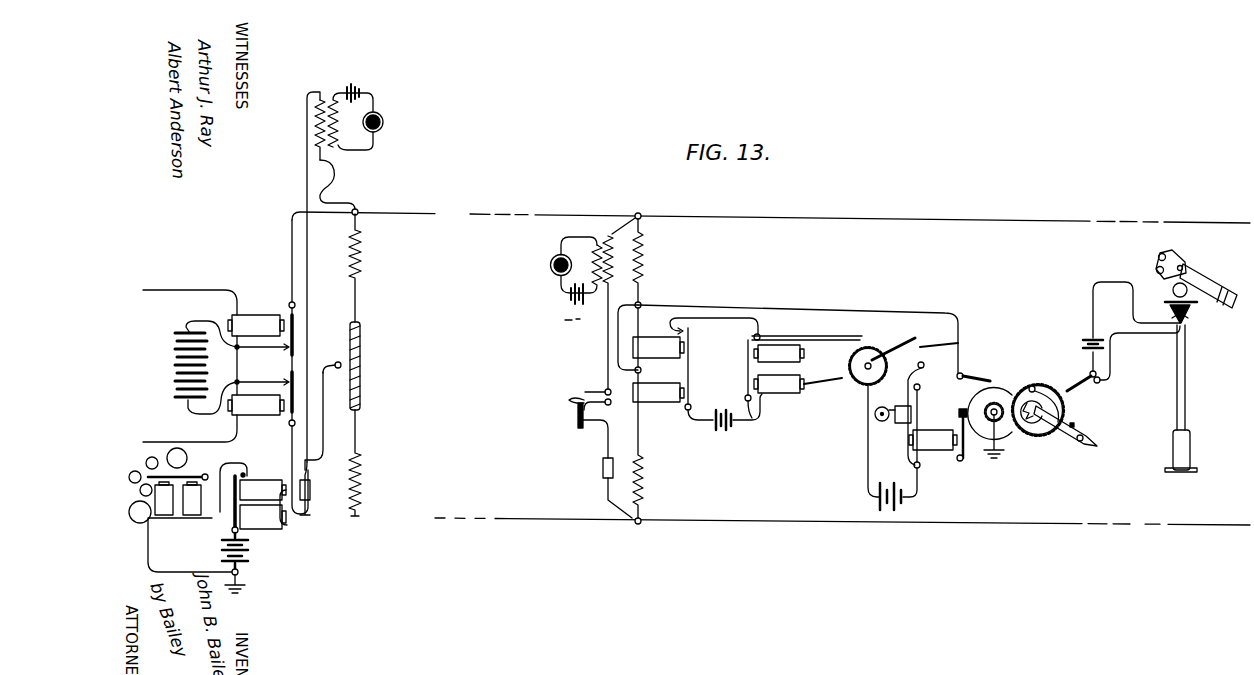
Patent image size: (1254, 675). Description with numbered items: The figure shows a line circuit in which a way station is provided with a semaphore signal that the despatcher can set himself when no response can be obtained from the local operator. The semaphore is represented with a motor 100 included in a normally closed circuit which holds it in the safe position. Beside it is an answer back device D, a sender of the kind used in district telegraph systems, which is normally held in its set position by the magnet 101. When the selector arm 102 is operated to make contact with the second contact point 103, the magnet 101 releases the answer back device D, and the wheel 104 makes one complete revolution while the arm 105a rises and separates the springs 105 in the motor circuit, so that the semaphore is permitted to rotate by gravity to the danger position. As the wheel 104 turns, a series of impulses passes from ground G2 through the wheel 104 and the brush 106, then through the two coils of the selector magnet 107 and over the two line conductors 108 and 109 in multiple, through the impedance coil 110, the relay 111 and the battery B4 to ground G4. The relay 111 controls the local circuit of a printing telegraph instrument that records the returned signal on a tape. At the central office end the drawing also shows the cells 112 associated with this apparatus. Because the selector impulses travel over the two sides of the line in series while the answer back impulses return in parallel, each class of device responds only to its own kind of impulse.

The motor 100 is at (1193, 300).
The magnet 101 is at (939, 447).
The selector arm 102 is at (899, 346).
The second contact point 103 is at (919, 388).
The wheel 104 is at (985, 440).
The springs 105 is at (1100, 378).
The arm 105a is at (1093, 437).
The brush 106 is at (982, 375).
The selector magnet 107 is at (663, 403).
The line conductor 108 is at (414, 203).
The line conductor 109 is at (426, 519).
The impedance coil 110 is at (360, 364).
The relay 111 is at (270, 534).
The battery cells 112 is at (176, 535).
The battery B4 is at (246, 571).
The ground G4 is at (244, 591).
The ground G2 is at (998, 460).
The answer back device D is at (1035, 381).